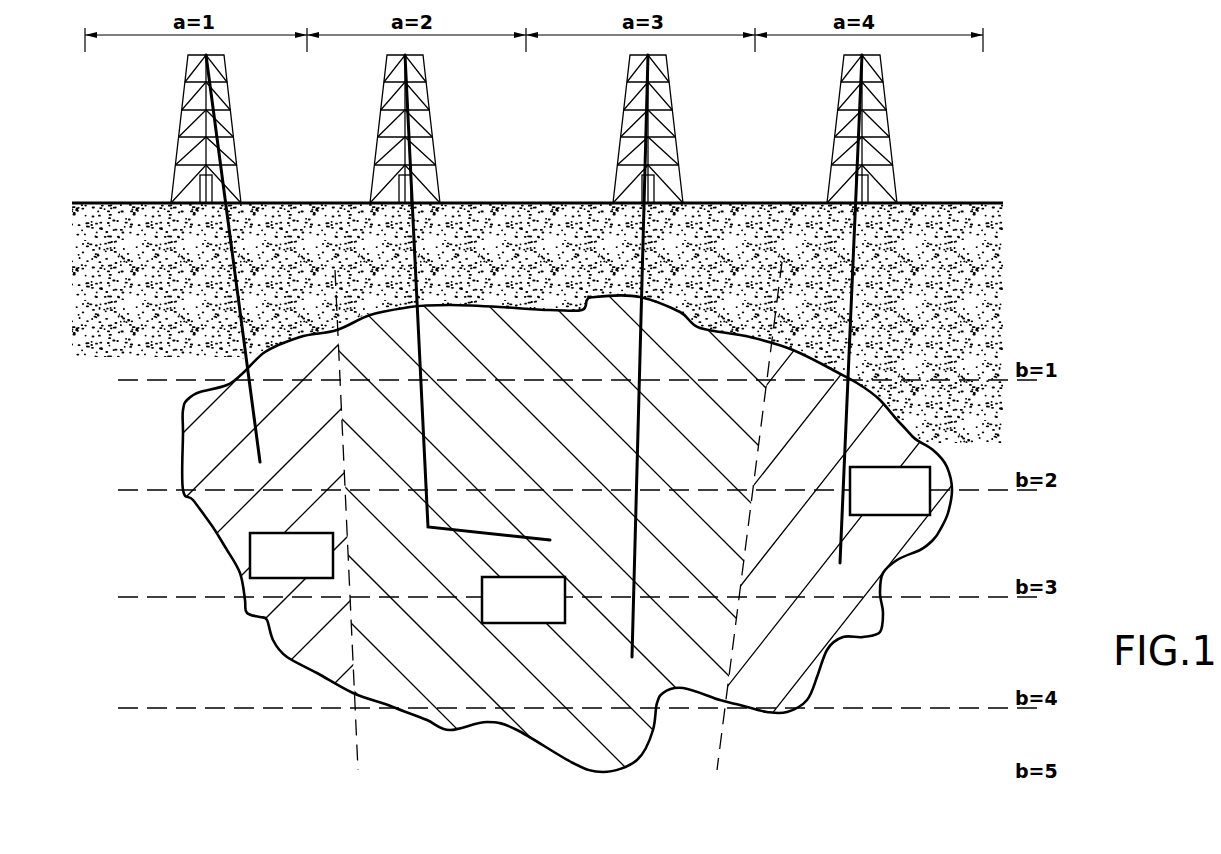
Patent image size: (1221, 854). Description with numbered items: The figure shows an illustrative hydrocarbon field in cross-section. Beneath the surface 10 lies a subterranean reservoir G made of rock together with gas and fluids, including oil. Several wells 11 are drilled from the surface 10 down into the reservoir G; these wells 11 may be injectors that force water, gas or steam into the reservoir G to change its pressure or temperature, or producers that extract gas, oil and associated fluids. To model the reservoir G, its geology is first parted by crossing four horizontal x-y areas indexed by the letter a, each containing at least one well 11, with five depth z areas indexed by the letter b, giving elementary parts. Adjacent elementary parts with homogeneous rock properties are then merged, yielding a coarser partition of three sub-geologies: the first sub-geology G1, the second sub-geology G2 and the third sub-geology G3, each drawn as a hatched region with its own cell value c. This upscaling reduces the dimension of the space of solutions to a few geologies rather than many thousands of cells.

The surface 10 is at (512, 203).
The wells 11 is at (430, 115).
The reservoir G is at (427, 722).
The first sub-geology G1 is at (250, 614).
The second sub-geology G2 is at (523, 625).
The third sub-geology G3 is at (889, 518).